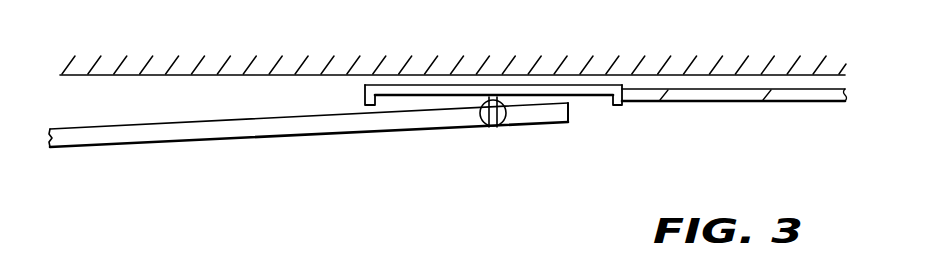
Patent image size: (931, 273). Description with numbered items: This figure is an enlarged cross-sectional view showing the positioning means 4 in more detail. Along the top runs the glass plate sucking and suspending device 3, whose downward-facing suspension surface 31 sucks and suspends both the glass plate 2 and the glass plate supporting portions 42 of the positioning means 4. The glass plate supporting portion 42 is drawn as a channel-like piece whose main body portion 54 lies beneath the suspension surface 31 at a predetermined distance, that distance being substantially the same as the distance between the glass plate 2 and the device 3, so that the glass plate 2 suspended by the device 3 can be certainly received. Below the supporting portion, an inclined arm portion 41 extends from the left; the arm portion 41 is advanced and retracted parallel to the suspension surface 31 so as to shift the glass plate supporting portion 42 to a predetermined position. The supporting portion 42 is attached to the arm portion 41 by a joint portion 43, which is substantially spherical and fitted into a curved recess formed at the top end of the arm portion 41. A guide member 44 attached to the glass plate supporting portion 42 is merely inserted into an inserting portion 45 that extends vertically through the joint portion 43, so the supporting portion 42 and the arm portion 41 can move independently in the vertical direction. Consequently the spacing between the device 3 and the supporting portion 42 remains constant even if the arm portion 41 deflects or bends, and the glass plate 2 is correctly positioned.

The glass plate 2 is at (725, 102).
The glass plate sucking and suspending device 3 is at (463, 62).
The positioning means 4 is at (308, 138).
The suspension surface 31 is at (317, 76).
The arm portion 41 is at (308, 131).
The glass plate supporting portion 42 is at (585, 96).
The joint portion 43 is at (500, 127).
The guide member 44 is at (502, 100).
The inserting portion 45 is at (492, 128).
The main body portion 54 is at (493, 84).